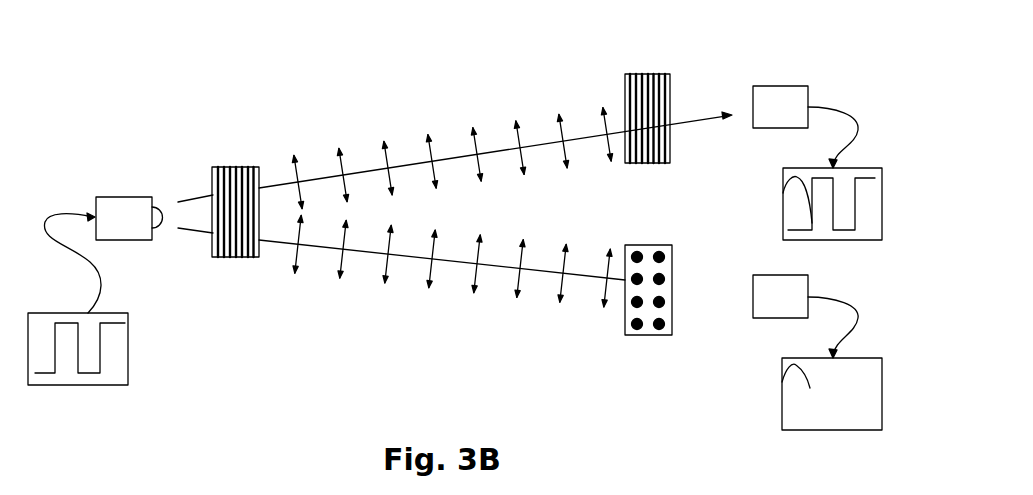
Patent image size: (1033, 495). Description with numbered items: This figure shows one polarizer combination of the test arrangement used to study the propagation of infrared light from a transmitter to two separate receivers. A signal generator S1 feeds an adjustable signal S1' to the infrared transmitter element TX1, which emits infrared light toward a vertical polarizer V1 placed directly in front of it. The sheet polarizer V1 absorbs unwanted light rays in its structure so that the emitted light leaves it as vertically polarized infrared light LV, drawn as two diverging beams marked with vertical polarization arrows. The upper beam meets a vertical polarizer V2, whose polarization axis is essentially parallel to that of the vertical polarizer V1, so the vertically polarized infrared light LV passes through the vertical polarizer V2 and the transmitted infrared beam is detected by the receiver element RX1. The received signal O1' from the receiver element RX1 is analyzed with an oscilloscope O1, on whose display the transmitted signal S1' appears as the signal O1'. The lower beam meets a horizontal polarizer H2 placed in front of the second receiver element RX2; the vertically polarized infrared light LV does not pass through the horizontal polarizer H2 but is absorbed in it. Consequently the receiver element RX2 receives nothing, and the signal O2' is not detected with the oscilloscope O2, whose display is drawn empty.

The transmitter element TX1 is at (129, 218).
The signal generator S1 is at (113, 299).
The adjustable signal S1' is at (87, 384).
The vertical polarizer V1 is at (230, 167).
The vertically polarized infrared light LV is at (498, 151).
The vertical polarizer V2 is at (625, 74).
The horizontal polarizer H2 is at (637, 335).
The receiver element RX1 is at (805, 127).
The oscilloscope O1 is at (847, 235).
The received signal O1' is at (761, 189).
The receiver element RX2 is at (805, 316).
The oscilloscope O2 is at (844, 424).
The received signal O2' is at (757, 370).